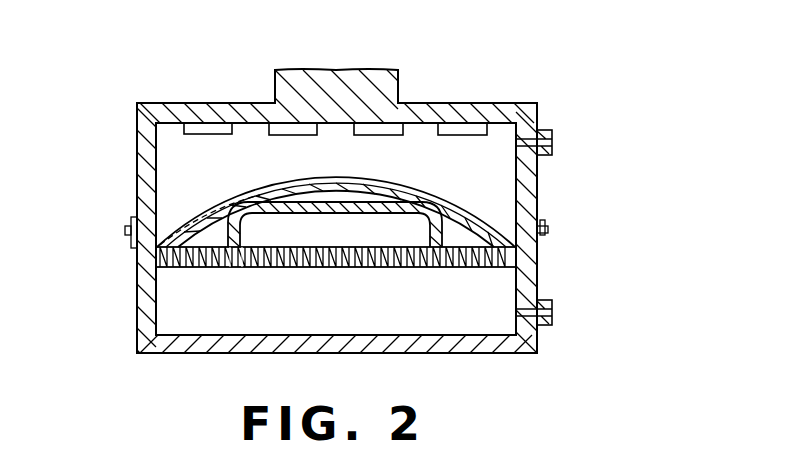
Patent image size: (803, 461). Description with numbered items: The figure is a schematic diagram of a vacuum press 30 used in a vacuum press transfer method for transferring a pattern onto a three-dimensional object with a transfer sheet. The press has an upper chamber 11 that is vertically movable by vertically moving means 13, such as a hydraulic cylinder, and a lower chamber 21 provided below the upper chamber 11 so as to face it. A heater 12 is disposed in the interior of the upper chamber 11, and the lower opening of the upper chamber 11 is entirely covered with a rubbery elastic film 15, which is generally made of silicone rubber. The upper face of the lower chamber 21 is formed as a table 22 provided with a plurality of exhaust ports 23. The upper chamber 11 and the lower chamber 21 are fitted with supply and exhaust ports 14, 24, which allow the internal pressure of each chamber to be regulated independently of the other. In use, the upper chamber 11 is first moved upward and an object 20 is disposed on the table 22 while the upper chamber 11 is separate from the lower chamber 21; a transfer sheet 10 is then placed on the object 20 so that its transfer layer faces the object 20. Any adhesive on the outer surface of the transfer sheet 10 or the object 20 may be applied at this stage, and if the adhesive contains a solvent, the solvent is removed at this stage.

The transfer sheet 10 is at (207, 229).
The upper chamber 11 is at (136, 158).
The heater 12 is at (190, 128).
The vertically moving means 13 is at (385, 70).
The supply and exhaust port 14 is at (553, 142).
The rubbery elastic film 15 is at (435, 197).
The object 20 is at (432, 234).
The lower chamber 21 is at (136, 310).
The table 22 is at (458, 268).
The exhaust ports 23 is at (242, 268).
The supply and exhaust port 24 is at (553, 312).
The vacuum press 30 is at (555, 87).